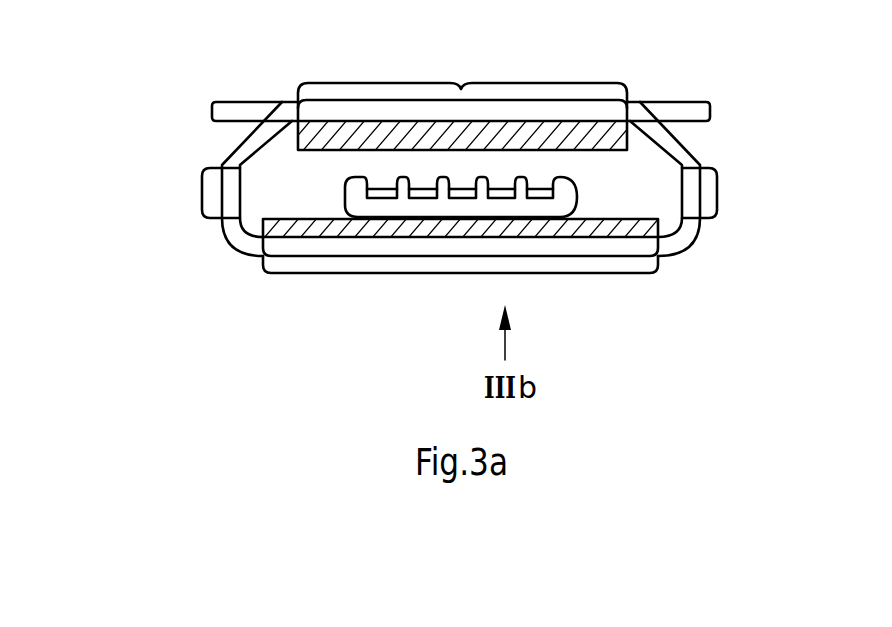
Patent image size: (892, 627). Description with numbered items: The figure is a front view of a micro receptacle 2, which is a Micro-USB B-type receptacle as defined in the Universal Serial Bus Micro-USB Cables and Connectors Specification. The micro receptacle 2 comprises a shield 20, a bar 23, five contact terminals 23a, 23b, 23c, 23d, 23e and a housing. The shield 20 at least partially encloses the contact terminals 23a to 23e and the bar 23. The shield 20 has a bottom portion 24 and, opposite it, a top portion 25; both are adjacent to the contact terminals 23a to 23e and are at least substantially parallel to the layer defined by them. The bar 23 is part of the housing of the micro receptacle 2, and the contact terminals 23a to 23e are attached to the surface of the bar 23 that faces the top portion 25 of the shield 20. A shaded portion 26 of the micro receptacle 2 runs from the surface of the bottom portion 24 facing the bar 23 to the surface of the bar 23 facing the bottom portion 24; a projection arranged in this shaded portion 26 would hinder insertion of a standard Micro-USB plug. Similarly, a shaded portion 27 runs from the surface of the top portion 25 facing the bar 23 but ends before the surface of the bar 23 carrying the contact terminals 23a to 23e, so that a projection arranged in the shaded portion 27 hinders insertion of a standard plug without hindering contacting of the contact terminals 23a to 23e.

The micro receptacle 2 is at (170, 70).
The shield 20 is at (230, 152).
The bar 23 is at (566, 203).
The contact terminal 23a is at (382, 187).
The contact terminal 23b is at (417, 187).
The contact terminal 23c is at (460, 187).
The contact terminal 23d is at (502, 187).
The contact terminal 23e is at (541, 187).
The bottom portion 24 is at (257, 259).
The top portion 25 is at (291, 100).
The shaded portion 26 is at (611, 230).
The shaded portion 27 is at (601, 133).